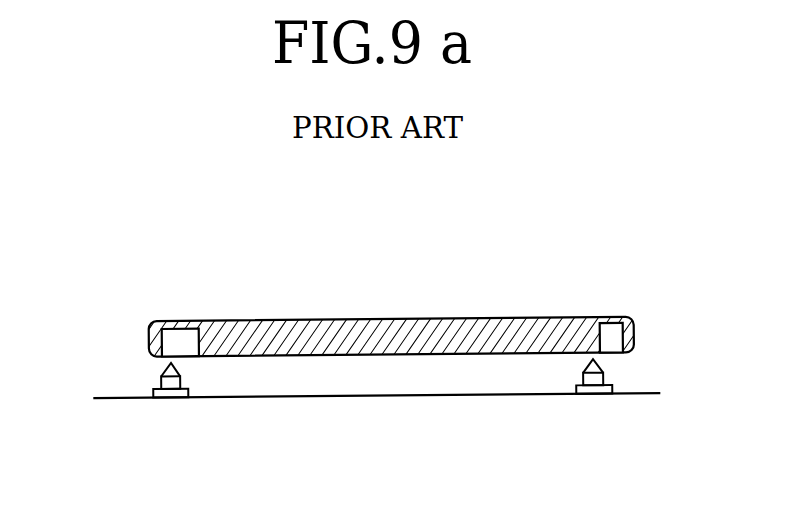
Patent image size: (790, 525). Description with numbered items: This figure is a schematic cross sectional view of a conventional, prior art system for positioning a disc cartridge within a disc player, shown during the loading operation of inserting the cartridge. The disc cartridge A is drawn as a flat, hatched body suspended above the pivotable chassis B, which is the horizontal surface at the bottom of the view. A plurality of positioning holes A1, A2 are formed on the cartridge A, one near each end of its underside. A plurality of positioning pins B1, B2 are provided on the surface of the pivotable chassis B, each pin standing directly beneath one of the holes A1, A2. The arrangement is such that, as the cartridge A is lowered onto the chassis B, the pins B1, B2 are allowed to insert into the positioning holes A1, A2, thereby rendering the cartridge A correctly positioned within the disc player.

The disc cartridge A is at (397, 338).
The positioning hole A1 is at (177, 333).
The positioning hole A2 is at (613, 335).
The pivotable chassis B is at (400, 460).
The positioning pin B1 is at (167, 381).
The positioning pin B2 is at (605, 377).